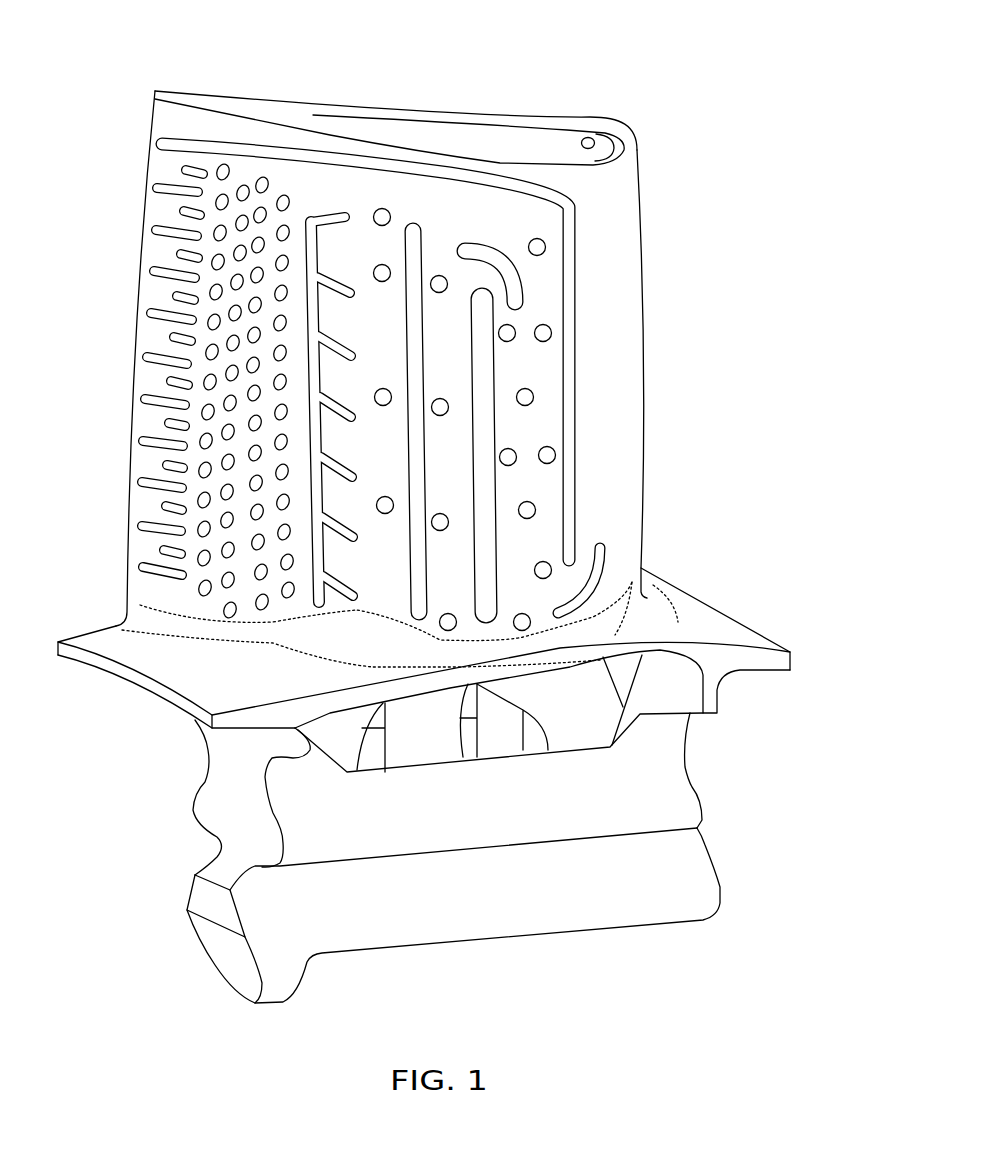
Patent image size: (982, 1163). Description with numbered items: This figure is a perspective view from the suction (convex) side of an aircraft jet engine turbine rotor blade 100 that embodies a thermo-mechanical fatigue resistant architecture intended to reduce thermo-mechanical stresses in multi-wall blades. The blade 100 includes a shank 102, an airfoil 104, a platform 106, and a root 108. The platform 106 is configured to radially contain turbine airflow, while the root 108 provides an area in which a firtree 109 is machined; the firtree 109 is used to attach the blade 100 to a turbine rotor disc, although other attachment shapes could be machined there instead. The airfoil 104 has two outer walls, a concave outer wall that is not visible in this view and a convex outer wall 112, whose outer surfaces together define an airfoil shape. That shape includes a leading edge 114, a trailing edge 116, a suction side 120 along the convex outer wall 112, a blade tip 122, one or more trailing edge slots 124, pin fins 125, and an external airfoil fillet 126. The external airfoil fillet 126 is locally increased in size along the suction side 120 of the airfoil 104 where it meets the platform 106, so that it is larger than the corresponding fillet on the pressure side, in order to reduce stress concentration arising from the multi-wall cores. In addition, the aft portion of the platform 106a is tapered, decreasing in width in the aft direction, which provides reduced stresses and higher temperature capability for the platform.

The turbine rotor blade 100 is at (706, 86).
The shank 102 is at (598, 712).
The airfoil 104 is at (477, 236).
The platform 106 is at (717, 617).
The aft portion of the platform 106a is at (261, 739).
The root 108 is at (207, 797).
The firtree 109 is at (177, 800).
The convex outer wall 112 is at (545, 278).
The leading edge 114 is at (643, 368).
The trailing edge 116 is at (137, 303).
The suction side 120 is at (216, 216).
The blade tip 122 is at (589, 137).
The trailing edge slots 124 is at (142, 357).
The pin fins 125 is at (224, 163).
The external airfoil fillet 126 is at (373, 632).